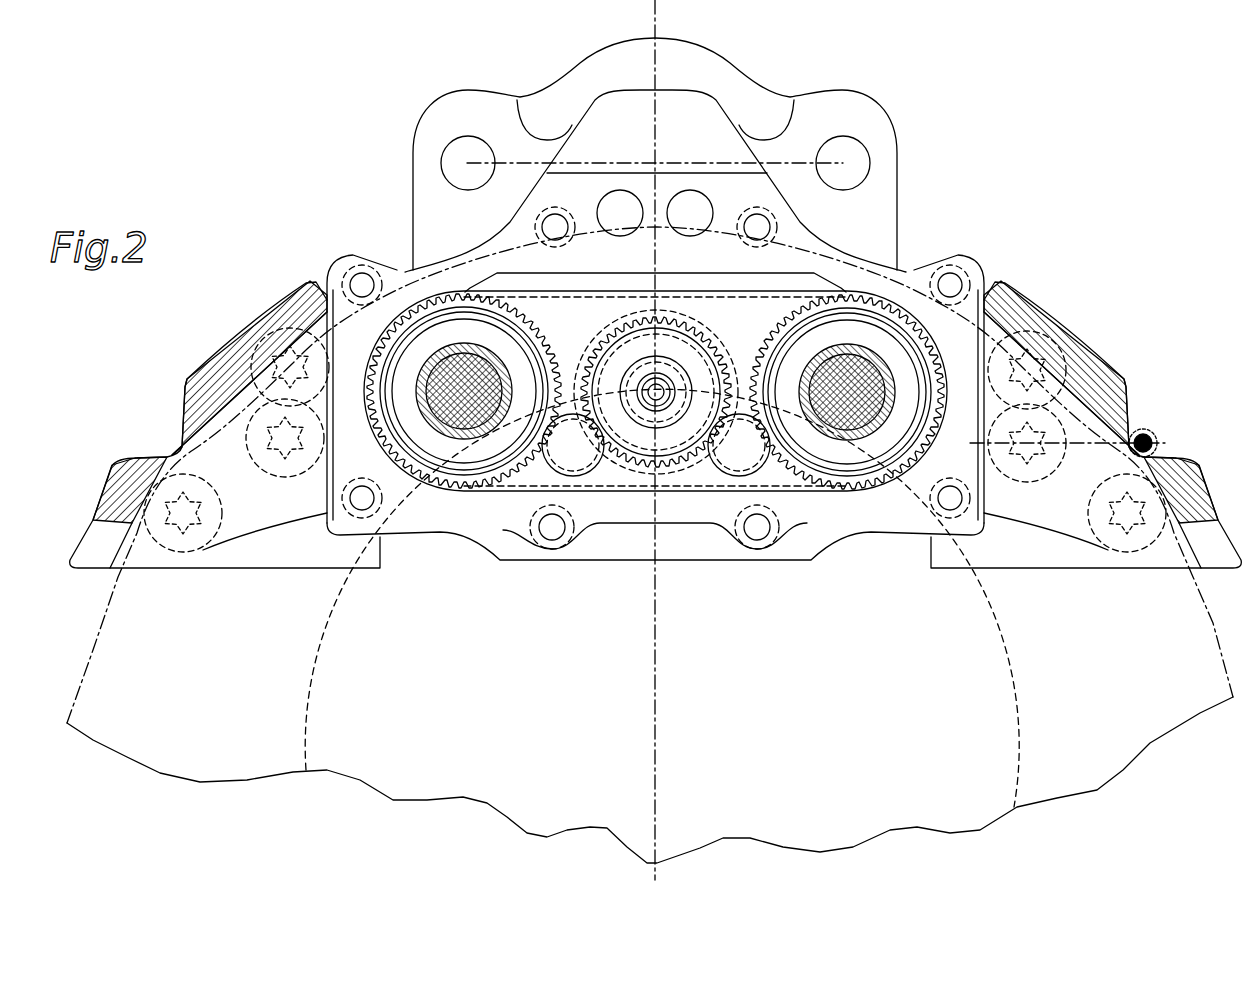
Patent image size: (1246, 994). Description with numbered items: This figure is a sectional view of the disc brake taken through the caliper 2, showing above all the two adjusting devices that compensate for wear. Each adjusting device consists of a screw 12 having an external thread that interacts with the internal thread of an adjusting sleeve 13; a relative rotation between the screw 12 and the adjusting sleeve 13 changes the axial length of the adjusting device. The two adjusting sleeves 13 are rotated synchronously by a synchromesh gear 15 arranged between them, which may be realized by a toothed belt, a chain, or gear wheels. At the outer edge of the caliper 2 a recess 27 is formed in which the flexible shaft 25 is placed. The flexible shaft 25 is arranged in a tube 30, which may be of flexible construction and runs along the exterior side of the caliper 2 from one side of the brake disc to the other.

The caliper 2 is at (656, 303).
The screw 12 is at (437, 383).
The adjusting sleeve 13 is at (440, 448).
The synchromesh gear 15 is at (663, 483).
The flexible shaft 25 is at (1152, 435).
The recess 27 is at (1140, 403).
The tube 30 is at (1150, 430).